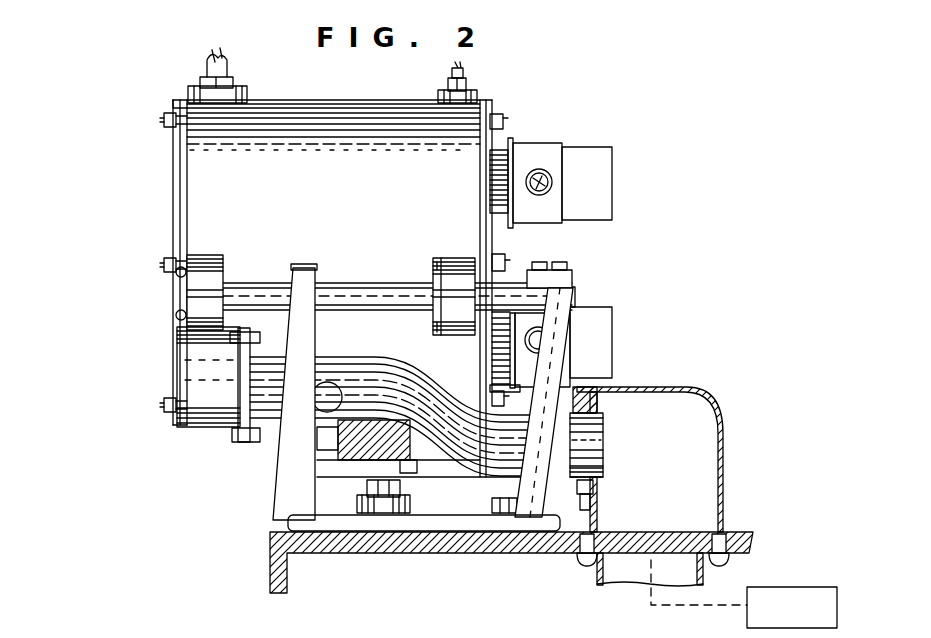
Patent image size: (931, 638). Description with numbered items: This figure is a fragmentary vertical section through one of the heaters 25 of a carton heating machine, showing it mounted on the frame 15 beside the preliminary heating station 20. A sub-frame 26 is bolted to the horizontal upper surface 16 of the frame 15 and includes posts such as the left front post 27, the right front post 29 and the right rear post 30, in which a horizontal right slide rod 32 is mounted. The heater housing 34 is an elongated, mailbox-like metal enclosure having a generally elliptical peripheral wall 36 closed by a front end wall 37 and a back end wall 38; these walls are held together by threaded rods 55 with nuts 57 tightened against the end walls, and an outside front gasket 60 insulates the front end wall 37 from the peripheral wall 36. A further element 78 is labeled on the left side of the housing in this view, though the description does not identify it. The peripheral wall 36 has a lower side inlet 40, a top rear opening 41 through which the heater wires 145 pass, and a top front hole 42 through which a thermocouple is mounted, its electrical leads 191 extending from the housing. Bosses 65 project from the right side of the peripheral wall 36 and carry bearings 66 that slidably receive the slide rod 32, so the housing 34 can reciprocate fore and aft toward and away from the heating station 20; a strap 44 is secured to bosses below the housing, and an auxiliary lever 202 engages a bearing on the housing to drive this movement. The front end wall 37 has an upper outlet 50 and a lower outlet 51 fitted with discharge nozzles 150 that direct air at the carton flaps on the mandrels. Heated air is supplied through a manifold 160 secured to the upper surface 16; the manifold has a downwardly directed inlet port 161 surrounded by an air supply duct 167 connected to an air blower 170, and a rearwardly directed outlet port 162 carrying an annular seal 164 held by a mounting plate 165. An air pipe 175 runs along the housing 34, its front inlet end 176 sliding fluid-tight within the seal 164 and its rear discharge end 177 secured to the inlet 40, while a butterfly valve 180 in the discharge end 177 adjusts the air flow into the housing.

The frame 15 is at (268, 578).
The horizontal upper surface 16 is at (290, 531).
The preliminary heating station 20 is at (578, 99).
The heater 25 is at (165, 170).
The sub-frame 26 is at (268, 507).
The left front post 27 is at (562, 262).
The right front post 29 is at (565, 276).
The right rear post 30 is at (303, 266).
The right slide rod 32 is at (350, 283).
The heater housing 34 is at (283, 99).
The peripheral wall 36 is at (197, 195).
The front end wall 37 is at (491, 100).
The back end wall 38 is at (178, 99).
The lower side inlet 40 is at (205, 425).
The top rear opening 41 is at (232, 86).
The top front hole 42 is at (446, 90).
The strap 44 is at (330, 458).
The upper outlet 50 is at (497, 172).
The lower outlet 51 is at (510, 363).
The threaded rod 55 is at (164, 120).
The nut 57 is at (173, 128).
The outside front gasket 60 is at (483, 186).
The boss 65 is at (205, 262).
The bearing 66 is at (185, 298).
The wall plate 78 is at (186, 218).
The wires 145 is at (228, 50).
The discharge nozzle 150 is at (598, 178).
The manifold 160 is at (714, 406).
The inlet port 161 is at (700, 540).
The outlet port 162 is at (600, 418).
The annular seal 164 is at (601, 460).
The mounting plate 165 is at (596, 500).
The air supply duct 167 is at (597, 575).
The air blower 170 is at (788, 586).
The air pipe 175 is at (450, 367).
The front inlet end 176 is at (587, 440).
The rear discharge end 177 is at (255, 432).
The butterfly valve 180 is at (323, 387).
The electrical leads 191 is at (465, 73).
The auxiliary lever 202 is at (405, 462).